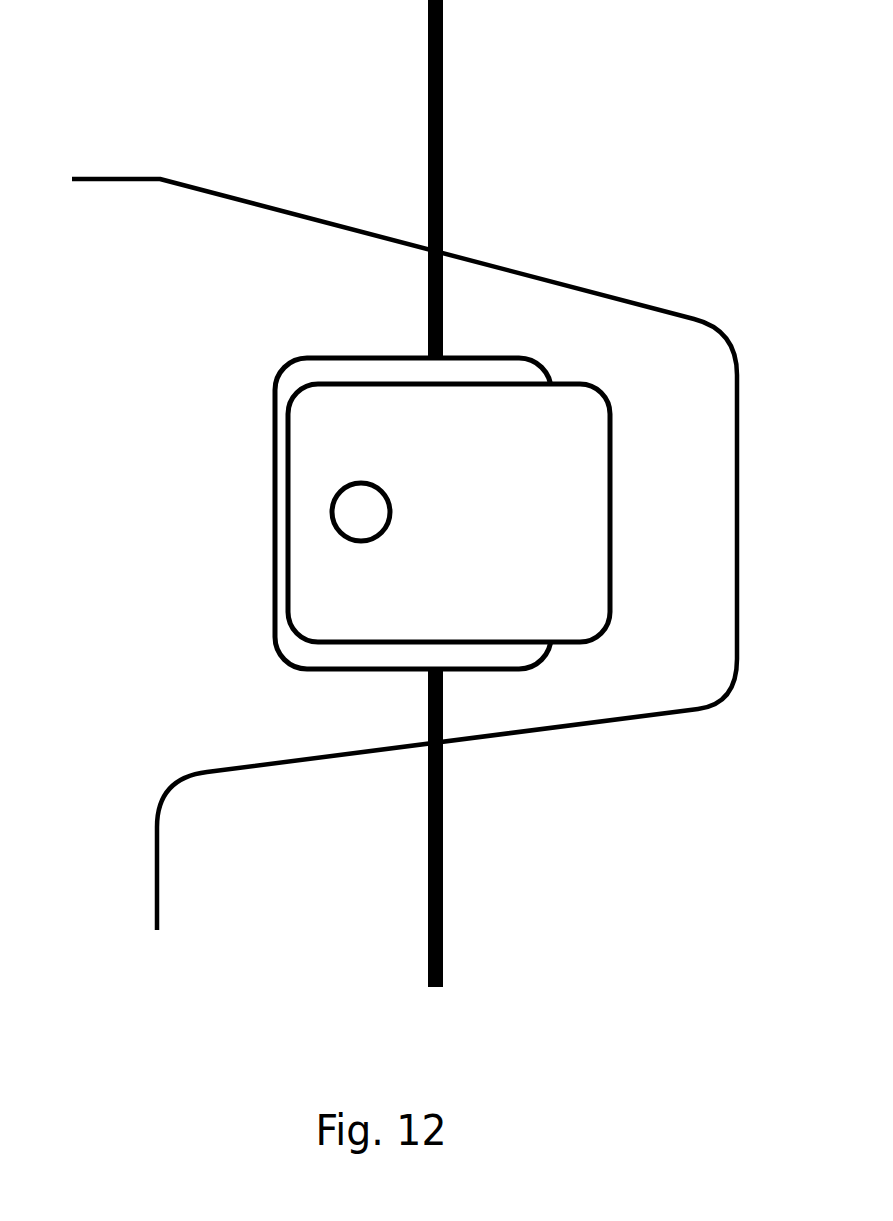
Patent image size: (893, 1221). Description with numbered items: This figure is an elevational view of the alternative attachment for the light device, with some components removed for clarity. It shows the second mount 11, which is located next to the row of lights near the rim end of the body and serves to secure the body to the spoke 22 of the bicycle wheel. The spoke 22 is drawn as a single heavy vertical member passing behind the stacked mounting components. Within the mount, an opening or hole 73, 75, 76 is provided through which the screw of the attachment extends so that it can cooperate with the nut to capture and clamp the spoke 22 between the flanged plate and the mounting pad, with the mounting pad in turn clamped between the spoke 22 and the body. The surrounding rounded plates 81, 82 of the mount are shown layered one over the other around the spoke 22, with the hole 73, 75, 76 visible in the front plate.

The second mount 11 is at (371, 313).
The spoke 22 is at (443, 148).
The opening 73 is at (216, 502).
The opening 75 is at (216, 502).
The opening 76 is at (332, 500).
The inner plate 81 is at (347, 384).
The outer plate 82 is at (305, 358).